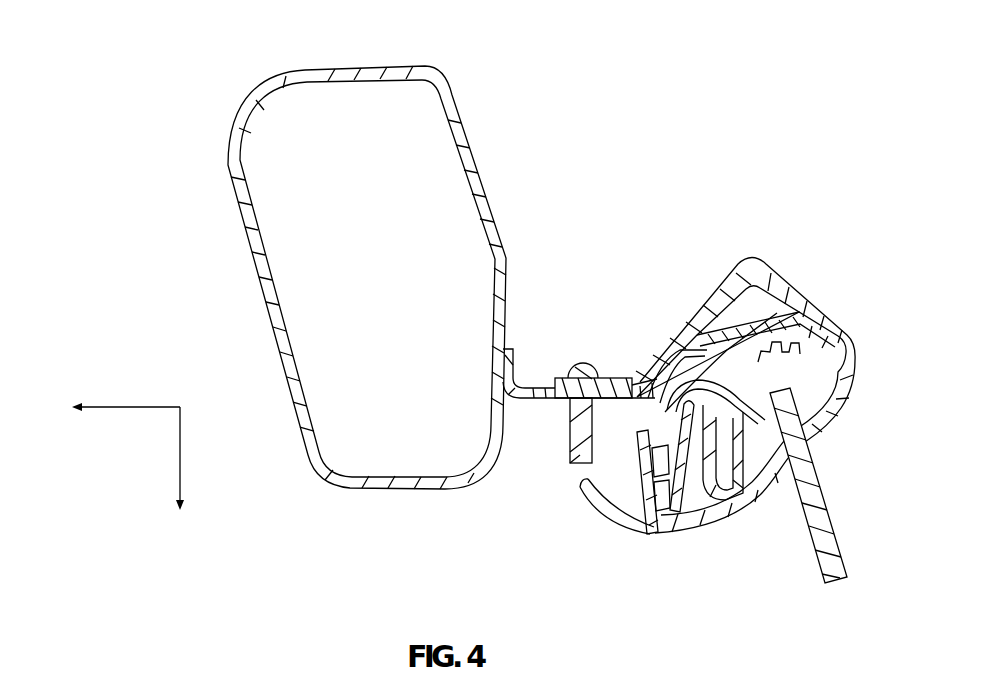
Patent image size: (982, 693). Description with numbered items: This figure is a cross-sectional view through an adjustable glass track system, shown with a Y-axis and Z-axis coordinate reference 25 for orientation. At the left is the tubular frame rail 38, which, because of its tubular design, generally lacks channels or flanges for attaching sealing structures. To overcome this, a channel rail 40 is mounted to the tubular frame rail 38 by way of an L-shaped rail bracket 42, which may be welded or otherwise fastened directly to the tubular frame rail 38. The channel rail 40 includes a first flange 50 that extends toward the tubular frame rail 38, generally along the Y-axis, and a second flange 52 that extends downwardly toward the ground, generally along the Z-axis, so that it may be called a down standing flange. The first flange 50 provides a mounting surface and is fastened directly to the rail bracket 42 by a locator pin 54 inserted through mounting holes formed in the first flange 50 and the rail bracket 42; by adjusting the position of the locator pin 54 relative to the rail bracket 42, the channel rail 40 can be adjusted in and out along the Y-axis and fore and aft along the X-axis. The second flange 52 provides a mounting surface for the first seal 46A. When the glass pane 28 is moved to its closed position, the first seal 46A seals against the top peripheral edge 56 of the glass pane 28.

The vehicle coordinate reference 25 is at (199, 388).
The glass pane 28 is at (830, 494).
The tubular frame rail 38 is at (347, 70).
The channel rail 40 is at (731, 394).
The rail bracket 42 is at (528, 405).
The first seal 46A is at (682, 540).
The first flange 50 is at (612, 387).
The second flange 52 is at (648, 535).
The locator pin 54 is at (568, 428).
The top peripheral edge 56 is at (782, 408).